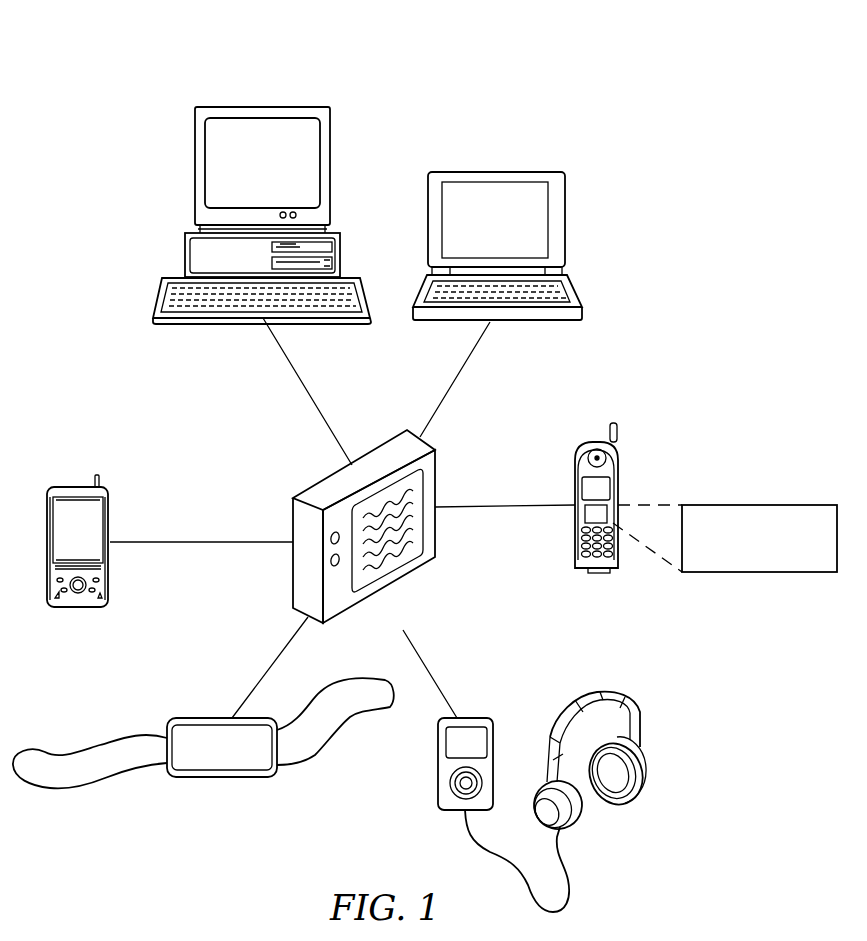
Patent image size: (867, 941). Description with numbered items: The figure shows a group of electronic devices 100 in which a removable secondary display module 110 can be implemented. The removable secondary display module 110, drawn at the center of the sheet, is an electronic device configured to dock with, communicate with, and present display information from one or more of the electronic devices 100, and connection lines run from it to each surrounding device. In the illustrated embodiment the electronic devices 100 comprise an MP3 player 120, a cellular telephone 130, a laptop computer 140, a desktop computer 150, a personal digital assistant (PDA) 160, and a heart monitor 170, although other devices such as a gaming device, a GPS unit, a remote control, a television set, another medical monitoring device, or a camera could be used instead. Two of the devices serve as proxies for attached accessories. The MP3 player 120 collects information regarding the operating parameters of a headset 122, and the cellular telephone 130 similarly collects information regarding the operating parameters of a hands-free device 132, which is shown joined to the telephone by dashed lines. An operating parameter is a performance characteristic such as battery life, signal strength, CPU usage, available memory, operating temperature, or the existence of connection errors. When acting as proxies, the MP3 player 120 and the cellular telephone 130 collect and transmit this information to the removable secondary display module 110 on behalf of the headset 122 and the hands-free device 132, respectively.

The electronic devices 100 is at (722, 255).
The removable secondary display module 110 is at (293, 517).
The MP3 player 120 is at (438, 767).
The headset 122 is at (643, 782).
The cellular telephone 130 is at (618, 488).
The hands-free device 132 is at (760, 572).
The laptop computer 140 is at (497, 170).
The desktop computer 150 is at (262, 107).
The personal digital assistant (PDA) 160 is at (73, 487).
The heart monitor 170 is at (213, 778).